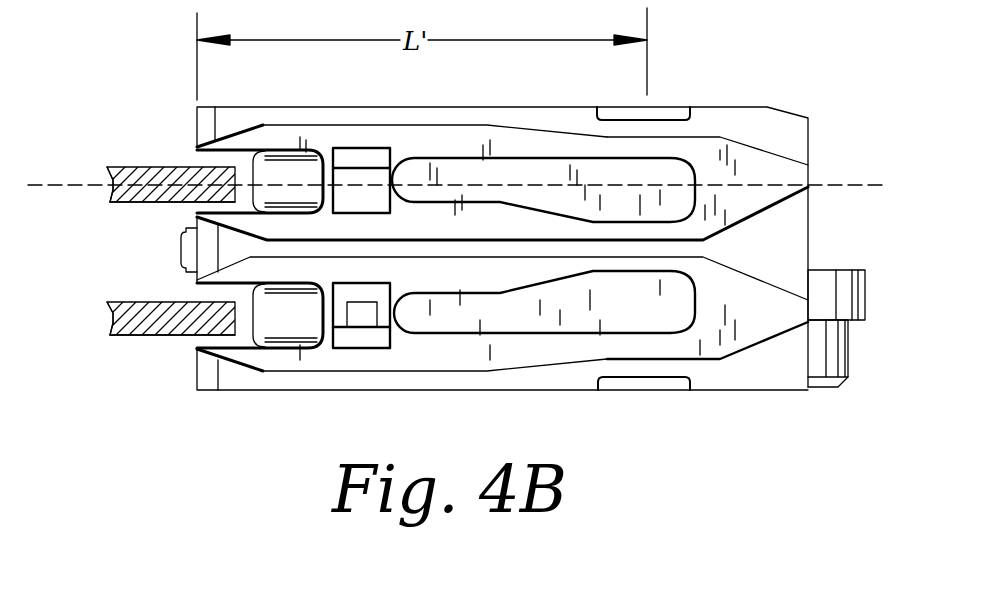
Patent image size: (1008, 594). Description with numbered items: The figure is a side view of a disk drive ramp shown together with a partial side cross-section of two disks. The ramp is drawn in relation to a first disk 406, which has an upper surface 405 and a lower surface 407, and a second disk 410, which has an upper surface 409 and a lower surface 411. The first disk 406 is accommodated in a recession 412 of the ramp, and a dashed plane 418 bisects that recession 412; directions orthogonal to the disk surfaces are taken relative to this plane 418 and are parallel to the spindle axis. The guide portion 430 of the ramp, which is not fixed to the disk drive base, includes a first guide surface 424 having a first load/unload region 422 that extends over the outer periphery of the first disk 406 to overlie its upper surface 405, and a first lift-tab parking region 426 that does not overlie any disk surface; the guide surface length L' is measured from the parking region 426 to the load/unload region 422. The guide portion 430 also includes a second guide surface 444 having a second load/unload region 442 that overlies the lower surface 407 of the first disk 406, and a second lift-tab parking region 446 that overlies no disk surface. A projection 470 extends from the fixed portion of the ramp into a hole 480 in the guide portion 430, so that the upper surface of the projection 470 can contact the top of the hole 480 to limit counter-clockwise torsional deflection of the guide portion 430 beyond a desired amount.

The upper surface 405 is at (132, 168).
The first disk 406 is at (112, 178).
The lower surface 407 is at (137, 203).
The upper surface 409 is at (130, 302).
The second disk 410 is at (112, 320).
The lower surface 411 is at (137, 335).
The recession 412 is at (195, 160).
The plane 418 is at (862, 180).
The first load/unload region 422 is at (240, 130).
The first guide surface 424 is at (430, 125).
The first lift-tab parking region 426 is at (650, 137).
The guide portion 430 is at (808, 235).
The second load/unload region 442 is at (218, 232).
The second guide surface 444 is at (357, 240).
The second lift-tab parking region 446 is at (662, 266).
The projection 470 is at (360, 320).
The hole 480 is at (380, 293).